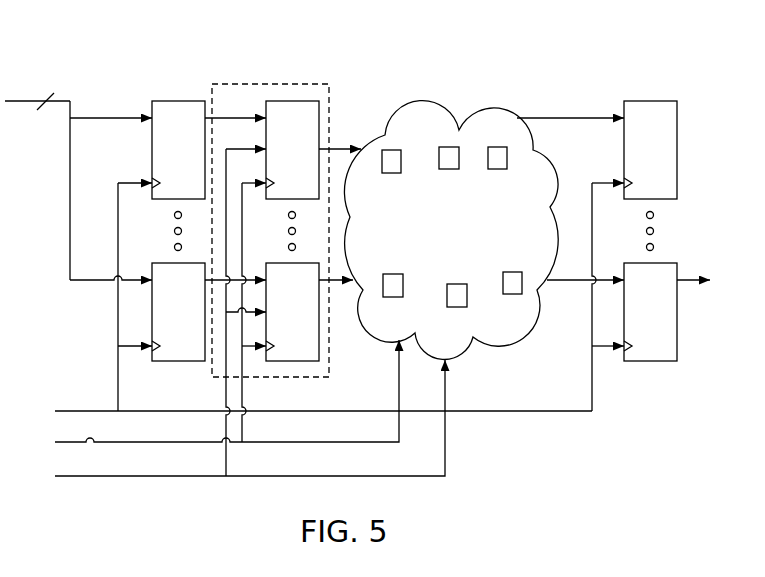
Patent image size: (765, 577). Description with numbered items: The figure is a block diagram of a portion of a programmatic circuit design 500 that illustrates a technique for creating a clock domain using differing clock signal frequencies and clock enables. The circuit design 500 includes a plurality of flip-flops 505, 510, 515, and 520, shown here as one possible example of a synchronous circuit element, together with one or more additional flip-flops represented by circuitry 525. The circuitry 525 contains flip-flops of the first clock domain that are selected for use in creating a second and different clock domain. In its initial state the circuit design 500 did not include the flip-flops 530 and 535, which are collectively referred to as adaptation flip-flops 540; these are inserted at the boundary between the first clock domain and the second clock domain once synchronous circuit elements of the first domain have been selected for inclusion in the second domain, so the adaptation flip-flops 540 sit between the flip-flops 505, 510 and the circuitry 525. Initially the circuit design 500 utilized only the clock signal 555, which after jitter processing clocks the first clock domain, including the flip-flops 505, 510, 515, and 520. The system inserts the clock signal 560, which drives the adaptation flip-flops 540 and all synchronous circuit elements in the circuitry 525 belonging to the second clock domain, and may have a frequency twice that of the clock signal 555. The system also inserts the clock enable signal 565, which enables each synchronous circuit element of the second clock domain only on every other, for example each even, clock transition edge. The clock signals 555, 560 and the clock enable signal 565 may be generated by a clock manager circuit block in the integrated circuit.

The circuit design 500 is at (327, 30).
The flip-flop 505 is at (196, 101).
The flip-flop 510 is at (194, 361).
The flip-flop 515 is at (652, 101).
The flip-flop 520 is at (661, 361).
The circuitry 525 is at (451, 230).
The flip-flop 530 is at (288, 101).
The flip-flop 535 is at (319, 340).
The adaptation flip-flops 540 is at (311, 84).
The clock signal 555 is at (301, 410).
The clock signal 560 is at (205, 396).
The clock enable signal 565 is at (228, 423).